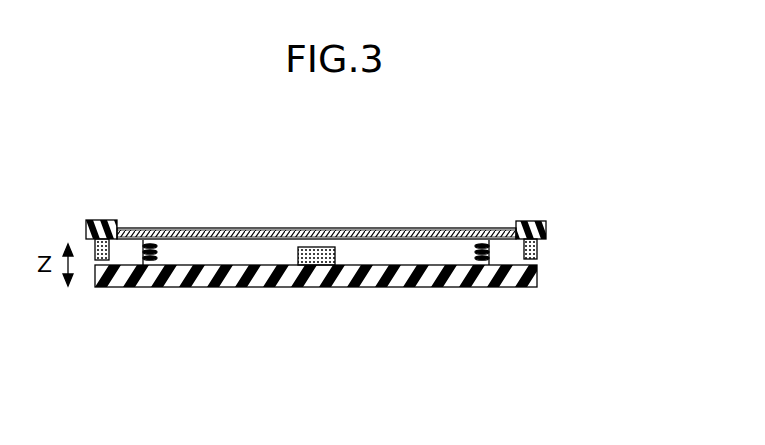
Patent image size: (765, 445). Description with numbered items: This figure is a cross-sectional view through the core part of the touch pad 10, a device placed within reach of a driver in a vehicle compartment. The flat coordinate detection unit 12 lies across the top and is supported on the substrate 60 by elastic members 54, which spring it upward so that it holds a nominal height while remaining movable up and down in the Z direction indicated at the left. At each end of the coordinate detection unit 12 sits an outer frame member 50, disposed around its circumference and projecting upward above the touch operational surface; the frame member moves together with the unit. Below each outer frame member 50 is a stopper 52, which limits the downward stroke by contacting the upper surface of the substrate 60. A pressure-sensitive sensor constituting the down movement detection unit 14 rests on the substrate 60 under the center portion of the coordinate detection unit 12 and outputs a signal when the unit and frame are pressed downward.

The touch pad 10 is at (266, 207).
The coordinate detection unit 12 is at (447, 229).
The down movement detection unit 14 is at (316, 268).
The outer frame member 50 is at (528, 221).
The stopper 52 is at (537, 252).
The elastic member 54 is at (490, 253).
The substrate 60 is at (422, 288).